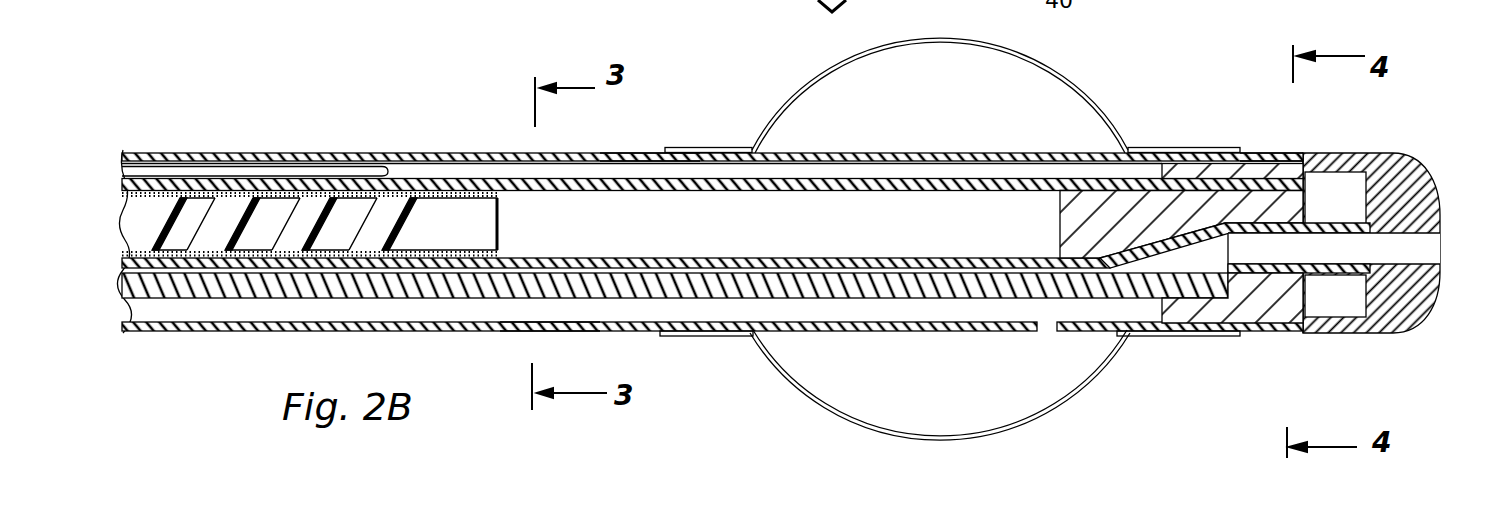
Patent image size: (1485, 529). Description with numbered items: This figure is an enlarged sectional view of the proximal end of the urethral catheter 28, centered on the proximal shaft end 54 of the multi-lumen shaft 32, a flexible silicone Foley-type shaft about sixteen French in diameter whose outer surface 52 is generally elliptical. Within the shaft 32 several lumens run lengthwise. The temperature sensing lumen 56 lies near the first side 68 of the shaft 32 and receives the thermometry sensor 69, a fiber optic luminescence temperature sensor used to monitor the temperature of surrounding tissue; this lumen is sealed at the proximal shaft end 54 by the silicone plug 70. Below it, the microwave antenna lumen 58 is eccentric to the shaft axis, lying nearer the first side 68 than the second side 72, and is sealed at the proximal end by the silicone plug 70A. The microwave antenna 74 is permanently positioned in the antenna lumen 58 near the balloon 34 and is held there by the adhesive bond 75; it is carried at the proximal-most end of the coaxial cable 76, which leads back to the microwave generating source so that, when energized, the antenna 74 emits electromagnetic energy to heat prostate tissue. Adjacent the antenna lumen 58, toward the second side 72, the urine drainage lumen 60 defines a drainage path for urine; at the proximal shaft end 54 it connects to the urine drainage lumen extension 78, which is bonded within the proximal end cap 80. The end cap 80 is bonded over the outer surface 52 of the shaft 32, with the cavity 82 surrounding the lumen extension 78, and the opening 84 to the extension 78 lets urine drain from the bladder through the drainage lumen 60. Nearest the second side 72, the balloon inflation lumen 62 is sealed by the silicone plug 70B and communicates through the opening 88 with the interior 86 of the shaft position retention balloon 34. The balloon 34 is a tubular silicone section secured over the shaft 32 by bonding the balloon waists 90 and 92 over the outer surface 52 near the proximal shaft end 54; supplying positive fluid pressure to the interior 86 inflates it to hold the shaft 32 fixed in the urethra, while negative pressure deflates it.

The catheter 28 is at (682, 355).
The multi-lumen shaft 32 is at (557, 155).
The shaft position retention balloon 34 is at (1020, 50).
The outer surface 52 is at (320, 242).
The proximal shaft end 54 is at (1263, 152).
The temperature sensing lumen 56 is at (697, 172).
The microwave antenna lumen 58 is at (747, 207).
The urine drainage lumen 60 is at (1177, 263).
The balloon inflation lumen 62 is at (553, 312).
The first side 68 is at (646, 153).
The thermometry sensor 69 is at (253, 168).
The silicone plug 70 is at (1188, 167).
The silicone plug 70A is at (1133, 213).
The silicone plug 70B is at (1253, 310).
The second side 72 is at (441, 328).
The microwave antenna 74 is at (313, 207).
The adhesive bond 75 is at (190, 195).
The coaxial cable 76 is at (463, 210).
The urine drainage lumen extension 78 is at (1356, 261).
The proximal end cap 80 is at (1410, 177).
The cavity 82 is at (1332, 180).
The opening 84 is at (1430, 243).
The interior 86 is at (1037, 393).
The opening 88 is at (1041, 330).
The balloon waist 90 is at (677, 152).
The balloon waist 92 is at (1177, 157).